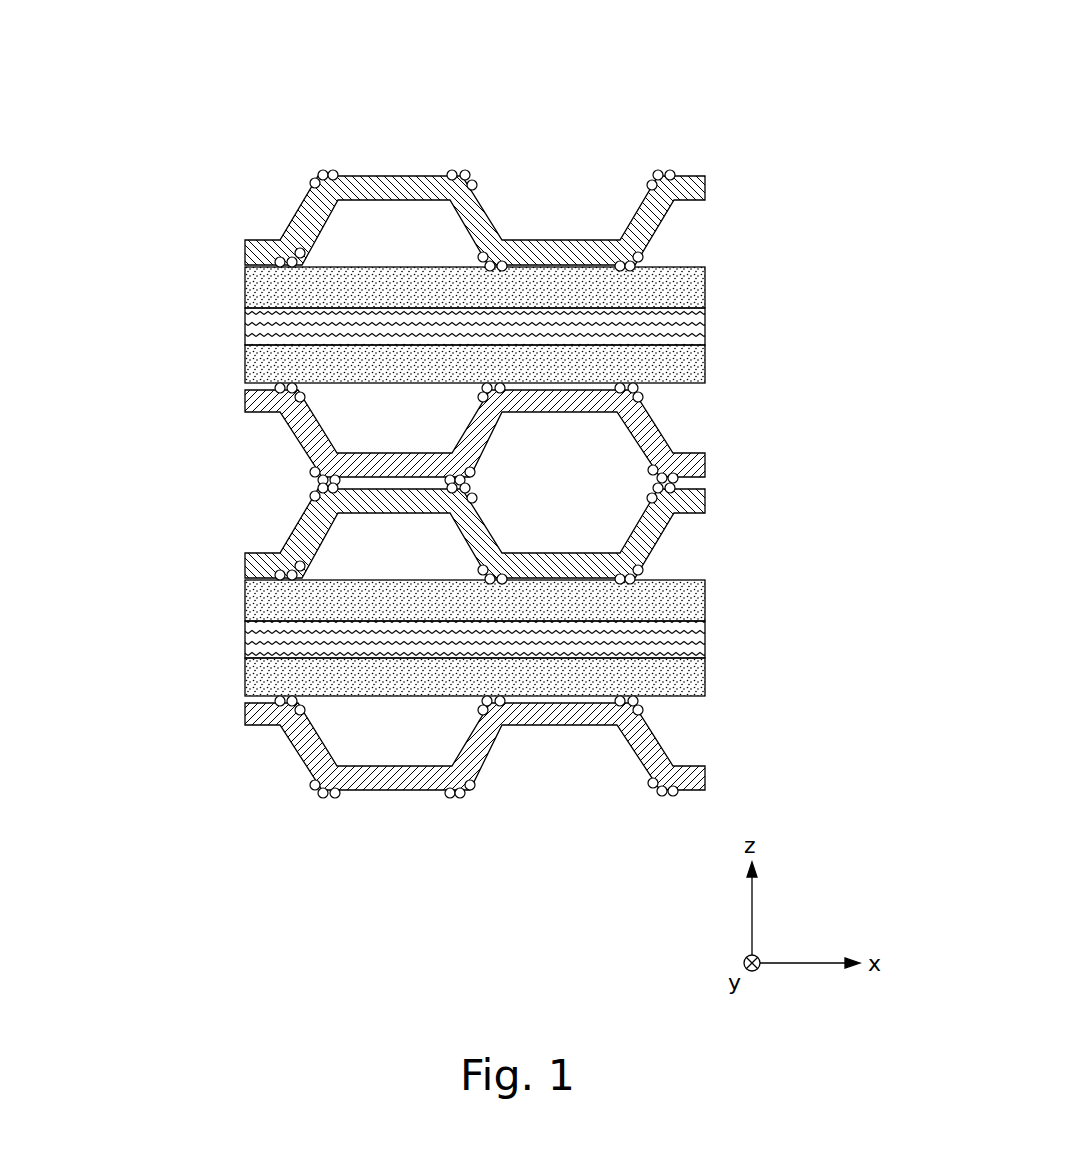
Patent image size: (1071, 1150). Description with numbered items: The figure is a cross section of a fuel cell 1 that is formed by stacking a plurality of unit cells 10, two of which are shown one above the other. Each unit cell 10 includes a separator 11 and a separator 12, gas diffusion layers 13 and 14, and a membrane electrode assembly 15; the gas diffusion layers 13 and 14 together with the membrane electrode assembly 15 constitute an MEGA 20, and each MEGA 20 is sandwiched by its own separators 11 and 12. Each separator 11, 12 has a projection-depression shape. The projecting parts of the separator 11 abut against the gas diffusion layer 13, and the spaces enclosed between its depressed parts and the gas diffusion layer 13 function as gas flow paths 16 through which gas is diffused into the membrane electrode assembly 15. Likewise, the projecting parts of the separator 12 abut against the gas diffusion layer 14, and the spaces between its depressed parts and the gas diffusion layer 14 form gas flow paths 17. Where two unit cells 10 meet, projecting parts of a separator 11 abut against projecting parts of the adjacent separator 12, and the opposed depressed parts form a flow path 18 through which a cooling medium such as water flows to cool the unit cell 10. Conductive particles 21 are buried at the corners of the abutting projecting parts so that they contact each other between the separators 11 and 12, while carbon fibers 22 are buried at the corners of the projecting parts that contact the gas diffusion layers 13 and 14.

The fuel cell 1 is at (805, 82).
The unit cell 10 is at (243, 790).
The separator 11 is at (707, 183).
The separator 12 is at (704, 452).
The gas diffusion layer 13 is at (704, 287).
The gas diffusion layer 14 is at (543, 515).
The membrane electrode assembly 15 is at (704, 328).
The gas flow path 16 is at (404, 245).
The gas flow path 17 is at (404, 432).
The flow path 18 is at (574, 502).
The MEGA 20 is at (576, 471).
The conductive particles 21 is at (315, 498).
The carbon fibers 22 is at (283, 388).